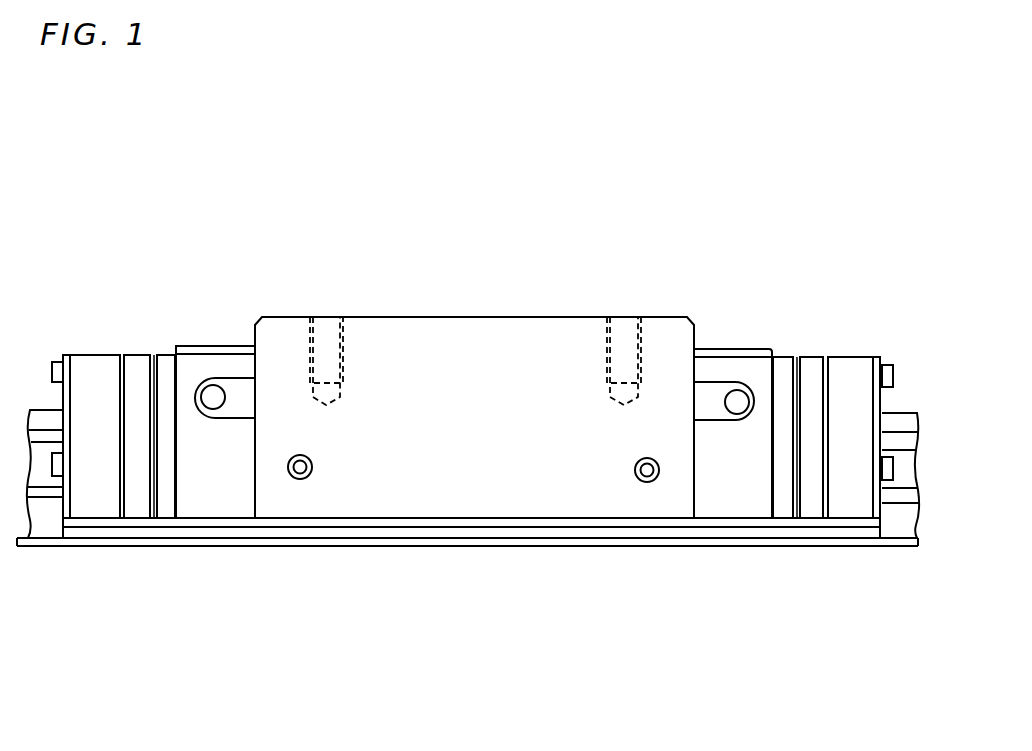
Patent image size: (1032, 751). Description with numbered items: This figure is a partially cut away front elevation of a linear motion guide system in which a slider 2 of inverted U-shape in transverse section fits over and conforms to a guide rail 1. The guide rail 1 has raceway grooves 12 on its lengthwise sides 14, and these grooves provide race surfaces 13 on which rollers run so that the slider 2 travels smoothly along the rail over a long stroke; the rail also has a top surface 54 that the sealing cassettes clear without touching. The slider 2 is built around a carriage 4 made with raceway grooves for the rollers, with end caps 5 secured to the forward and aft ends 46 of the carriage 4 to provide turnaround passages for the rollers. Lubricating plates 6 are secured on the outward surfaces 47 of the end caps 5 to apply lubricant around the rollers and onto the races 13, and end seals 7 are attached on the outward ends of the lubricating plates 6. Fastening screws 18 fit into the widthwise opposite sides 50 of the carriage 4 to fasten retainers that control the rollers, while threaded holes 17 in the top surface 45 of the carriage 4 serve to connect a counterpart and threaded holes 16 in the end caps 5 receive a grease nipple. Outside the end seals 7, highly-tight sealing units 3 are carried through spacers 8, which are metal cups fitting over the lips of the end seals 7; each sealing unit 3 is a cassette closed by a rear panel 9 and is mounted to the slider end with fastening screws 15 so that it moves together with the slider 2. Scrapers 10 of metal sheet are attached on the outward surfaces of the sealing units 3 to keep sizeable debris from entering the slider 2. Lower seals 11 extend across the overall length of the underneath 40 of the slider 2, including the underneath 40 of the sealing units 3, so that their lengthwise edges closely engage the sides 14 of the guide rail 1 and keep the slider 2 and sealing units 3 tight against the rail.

The guide rail 1 is at (42, 530).
The slider 2 is at (475, 428).
The highly-tight sealing unit 3 is at (103, 503).
The carriage 4 is at (415, 357).
The end cap 5 is at (237, 363).
The lubricating plate 6 is at (162, 368).
The end seal 7 is at (148, 378).
The spacer 8 is at (137, 503).
The rear panel 9 is at (121, 387).
The scraper 10 is at (68, 355).
The lower seal 11 is at (560, 523).
The raceway groove 12 is at (43, 477).
The race surface 13 is at (900, 413).
The lengthwise side 14 is at (37, 519).
The fastening screw 15 is at (35, 410).
The threaded hole 16 is at (213, 397).
The threaded hole 17 is at (313, 340).
The fastening screw 18 is at (300, 479).
The underneath 40 is at (484, 519).
The top surface 45 is at (489, 318).
The forward and aft ends 46 is at (255, 473).
The outward surface 47 is at (170, 503).
The widthwise opposite side 50 is at (402, 468).
The top surface 54 is at (915, 413).